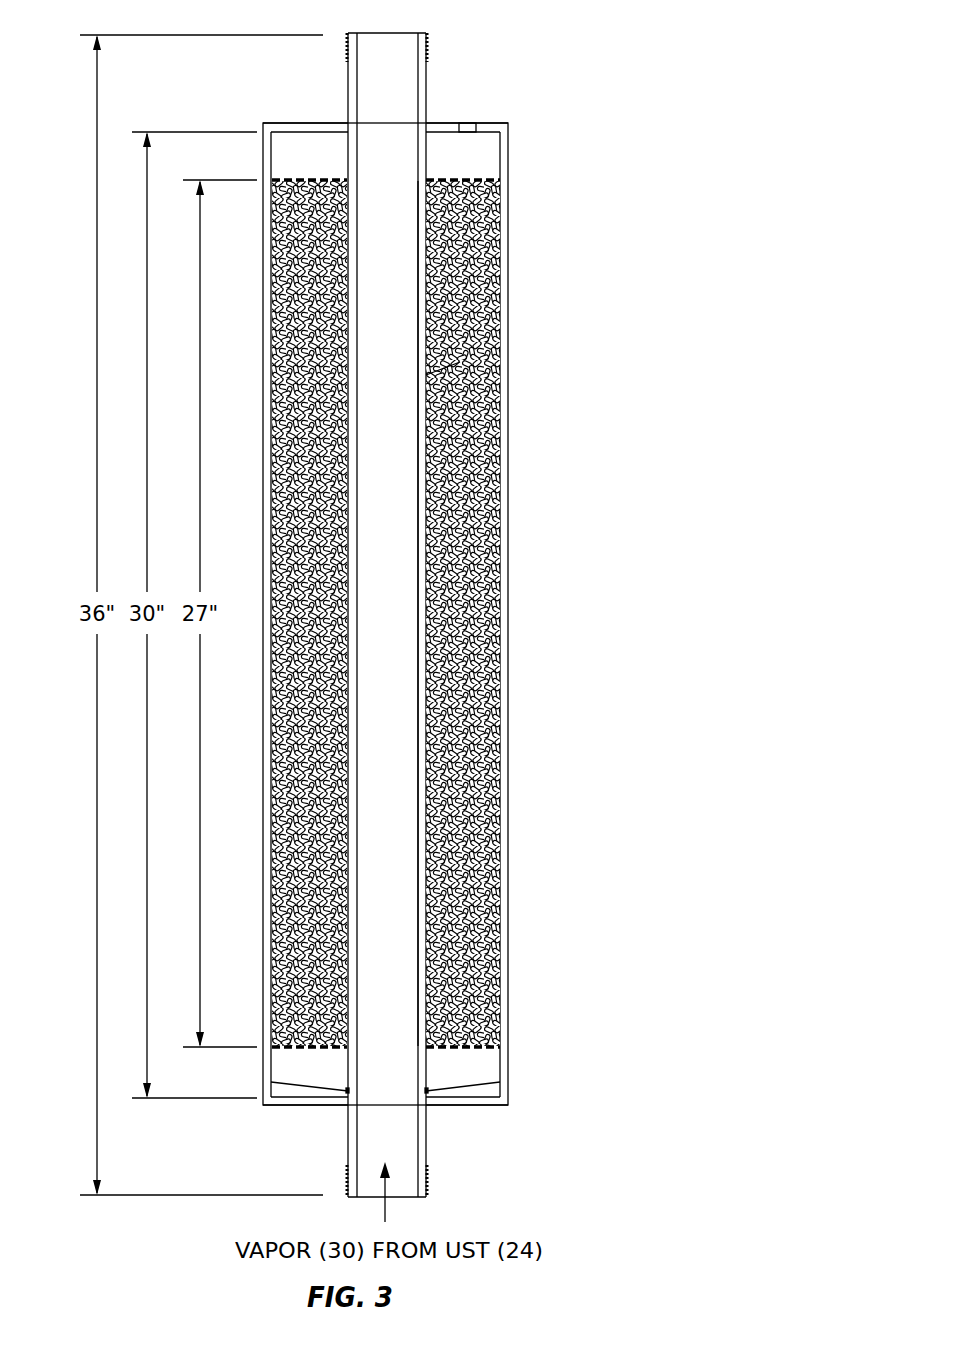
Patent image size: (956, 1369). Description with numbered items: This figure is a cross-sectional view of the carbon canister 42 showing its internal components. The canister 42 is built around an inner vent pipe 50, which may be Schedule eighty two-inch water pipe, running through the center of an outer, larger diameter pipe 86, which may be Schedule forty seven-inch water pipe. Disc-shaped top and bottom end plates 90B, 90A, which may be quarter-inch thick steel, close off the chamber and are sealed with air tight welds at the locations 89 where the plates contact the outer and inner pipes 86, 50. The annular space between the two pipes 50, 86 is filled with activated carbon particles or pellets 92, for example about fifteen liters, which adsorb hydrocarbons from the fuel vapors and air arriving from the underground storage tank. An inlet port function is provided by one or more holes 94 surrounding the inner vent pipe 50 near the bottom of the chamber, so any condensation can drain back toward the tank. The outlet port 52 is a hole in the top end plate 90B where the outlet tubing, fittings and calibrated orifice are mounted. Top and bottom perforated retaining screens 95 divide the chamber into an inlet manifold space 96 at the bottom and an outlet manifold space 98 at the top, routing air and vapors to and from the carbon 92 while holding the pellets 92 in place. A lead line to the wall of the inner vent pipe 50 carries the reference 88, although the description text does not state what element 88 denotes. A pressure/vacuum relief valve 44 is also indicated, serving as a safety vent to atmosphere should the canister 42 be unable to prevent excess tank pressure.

The canister 42 is at (383, 598).
The pressure/vacuum relief valve 44 is at (425, 375).
The inner vent pipe 50 is at (428, 48).
The outlet port 52 is at (468, 128).
The outer pipe 86 is at (510, 438).
The perforated inner tube 88 is at (420, 273).
The weld locations 89 is at (345, 123).
The bottom end plate 90A is at (288, 1105).
The top end plate 90B is at (262, 125).
The activated carbon pellets 92 is at (300, 237).
The inlet port holes 94 is at (271, 1083).
The perforated retaining screens 95 is at (275, 180).
The inlet manifold space 96 is at (475, 1062).
The outlet manifold space 98 is at (328, 145).